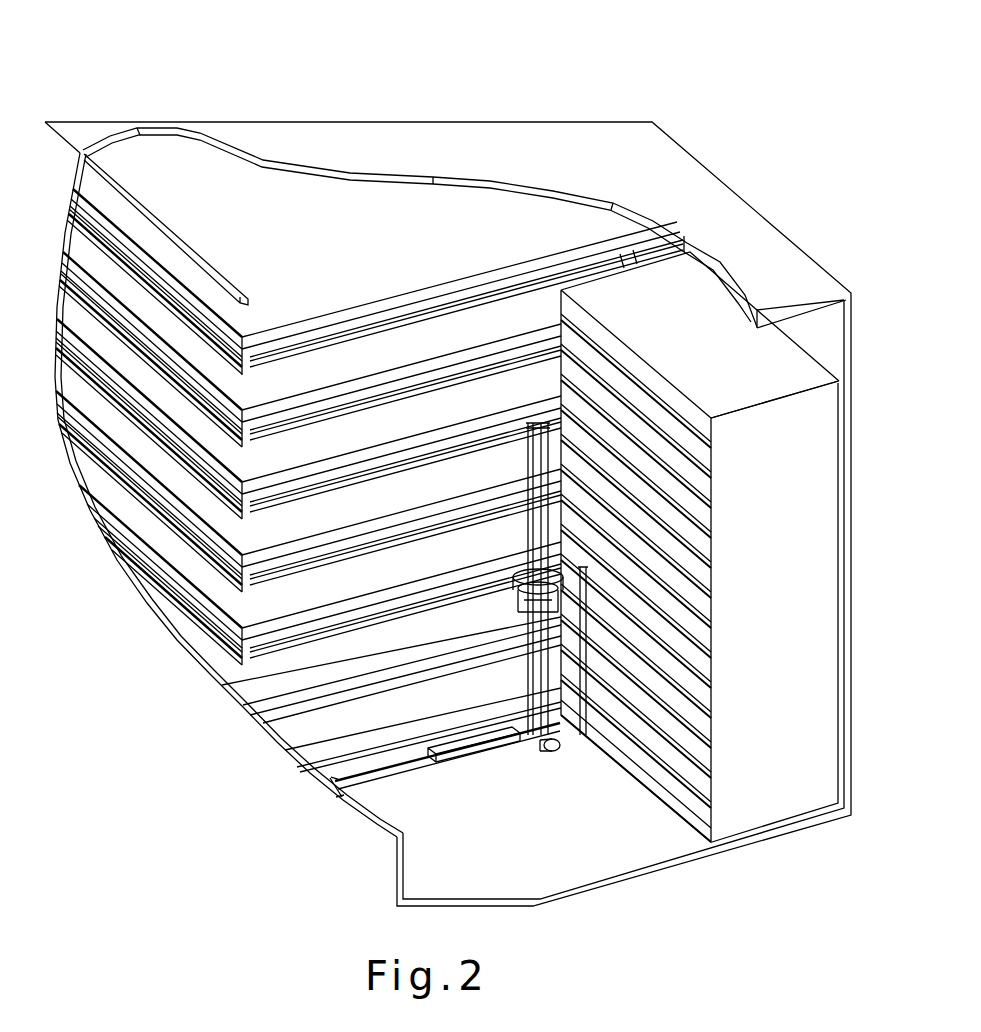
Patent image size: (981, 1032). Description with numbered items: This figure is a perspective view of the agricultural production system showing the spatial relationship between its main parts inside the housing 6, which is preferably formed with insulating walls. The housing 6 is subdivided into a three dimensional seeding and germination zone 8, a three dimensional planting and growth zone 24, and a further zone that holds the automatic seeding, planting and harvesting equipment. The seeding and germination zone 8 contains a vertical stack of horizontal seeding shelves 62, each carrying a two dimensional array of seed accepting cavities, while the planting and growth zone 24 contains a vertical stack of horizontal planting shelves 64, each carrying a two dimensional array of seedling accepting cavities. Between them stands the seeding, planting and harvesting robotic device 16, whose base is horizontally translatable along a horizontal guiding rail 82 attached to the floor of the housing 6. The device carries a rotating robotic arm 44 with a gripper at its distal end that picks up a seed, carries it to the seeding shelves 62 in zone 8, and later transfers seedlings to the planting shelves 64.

The housing 6 is at (547, 143).
The seeding and germination zone 8 is at (810, 562).
The horizontal guiding rail 82 is at (849, 293).
The planting and growth zone 24 is at (408, 292).
The seeding shelves 62 is at (657, 723).
The robotic arm 44 is at (583, 727).
The seeding, planting and harvesting robotic device 16 is at (515, 732).
The planting shelves 64 is at (387, 678).